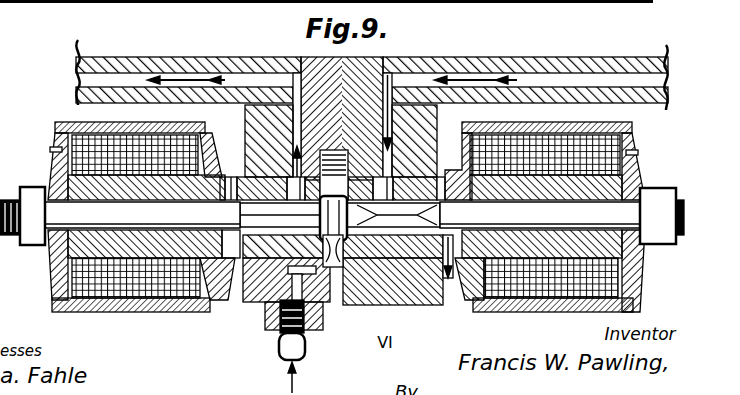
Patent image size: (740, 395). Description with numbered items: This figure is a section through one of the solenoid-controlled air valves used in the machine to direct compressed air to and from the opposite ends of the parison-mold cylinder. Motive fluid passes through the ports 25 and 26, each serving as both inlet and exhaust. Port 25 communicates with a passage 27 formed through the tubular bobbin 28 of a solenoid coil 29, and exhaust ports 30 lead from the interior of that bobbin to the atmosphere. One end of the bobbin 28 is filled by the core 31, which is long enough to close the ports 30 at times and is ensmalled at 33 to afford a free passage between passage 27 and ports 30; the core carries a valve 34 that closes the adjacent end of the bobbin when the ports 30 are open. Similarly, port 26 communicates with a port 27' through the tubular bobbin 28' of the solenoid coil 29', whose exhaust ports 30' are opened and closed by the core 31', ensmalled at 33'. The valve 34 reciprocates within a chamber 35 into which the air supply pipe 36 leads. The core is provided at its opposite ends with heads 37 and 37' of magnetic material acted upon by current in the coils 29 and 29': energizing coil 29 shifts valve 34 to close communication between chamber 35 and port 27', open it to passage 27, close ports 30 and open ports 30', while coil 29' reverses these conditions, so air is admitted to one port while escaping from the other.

The port 25 is at (434, 78).
The port 26 is at (232, 78).
The passage 27 is at (380, 239).
The port 27' is at (270, 167).
The tubular bobbin 28 is at (449, 281).
The tubular bobbin 28' is at (141, 234).
The solenoid coil 29 is at (571, 209).
The solenoid coil 29' is at (136, 238).
The exhaust ports 30 is at (419, 136).
The exhaust ports 30' is at (266, 136).
The core 31 is at (540, 215).
The core 31' is at (142, 215).
The ensmalled portion of core 33 is at (394, 216).
The ensmalled portion of core 33' is at (273, 203).
The valve 34 is at (332, 303).
The chamber 35 is at (347, 303).
The air supply pipe 36 is at (278, 347).
The head 37 is at (661, 238).
The head 37' is at (23, 241).